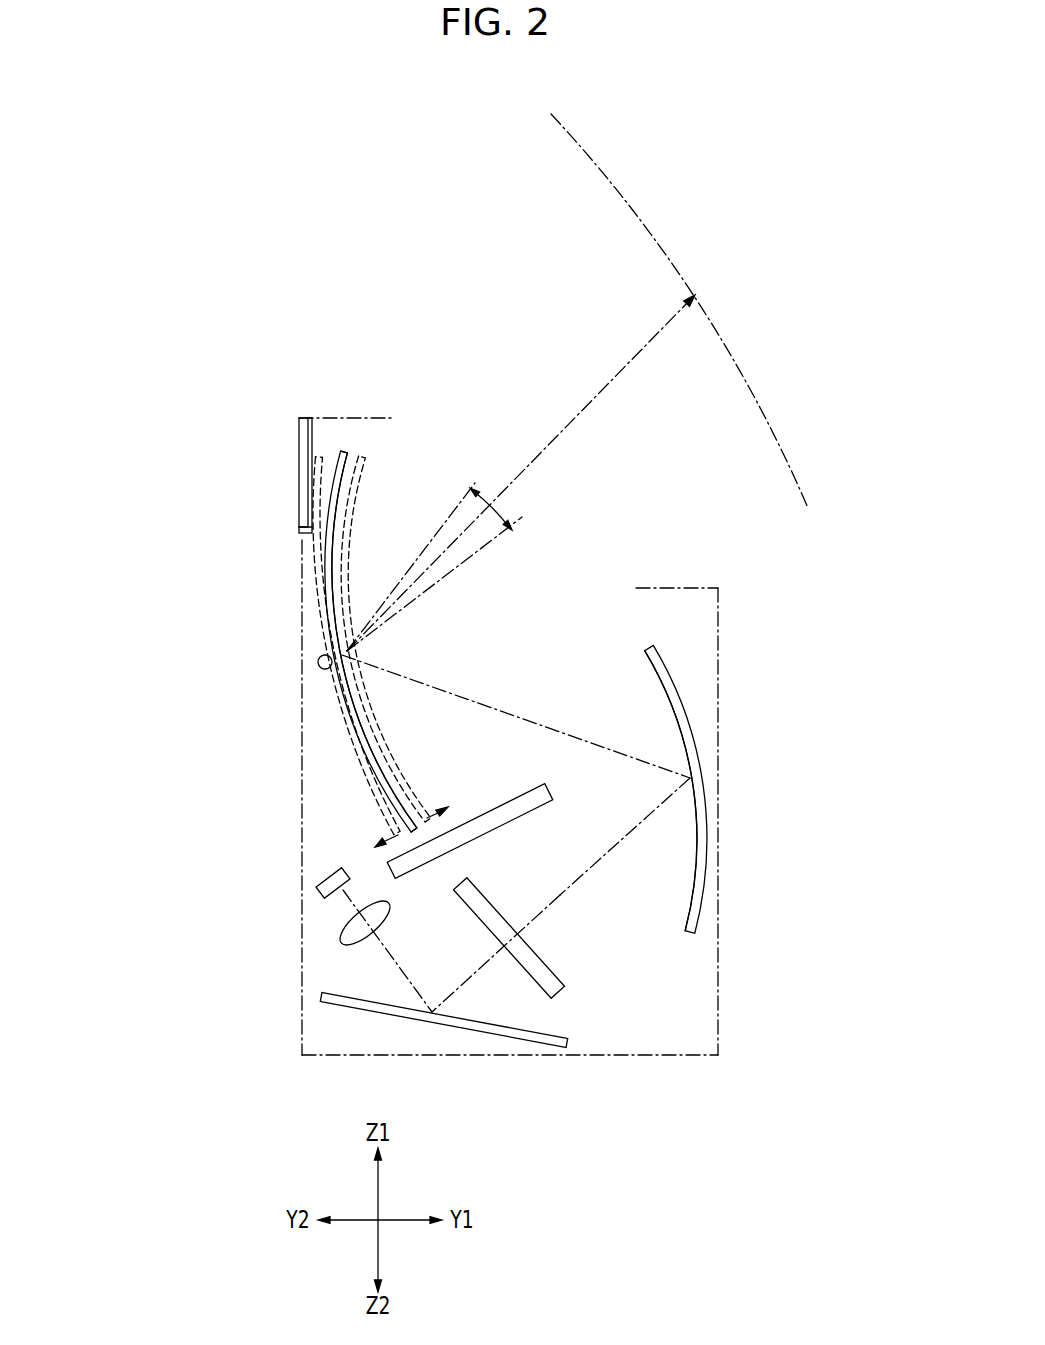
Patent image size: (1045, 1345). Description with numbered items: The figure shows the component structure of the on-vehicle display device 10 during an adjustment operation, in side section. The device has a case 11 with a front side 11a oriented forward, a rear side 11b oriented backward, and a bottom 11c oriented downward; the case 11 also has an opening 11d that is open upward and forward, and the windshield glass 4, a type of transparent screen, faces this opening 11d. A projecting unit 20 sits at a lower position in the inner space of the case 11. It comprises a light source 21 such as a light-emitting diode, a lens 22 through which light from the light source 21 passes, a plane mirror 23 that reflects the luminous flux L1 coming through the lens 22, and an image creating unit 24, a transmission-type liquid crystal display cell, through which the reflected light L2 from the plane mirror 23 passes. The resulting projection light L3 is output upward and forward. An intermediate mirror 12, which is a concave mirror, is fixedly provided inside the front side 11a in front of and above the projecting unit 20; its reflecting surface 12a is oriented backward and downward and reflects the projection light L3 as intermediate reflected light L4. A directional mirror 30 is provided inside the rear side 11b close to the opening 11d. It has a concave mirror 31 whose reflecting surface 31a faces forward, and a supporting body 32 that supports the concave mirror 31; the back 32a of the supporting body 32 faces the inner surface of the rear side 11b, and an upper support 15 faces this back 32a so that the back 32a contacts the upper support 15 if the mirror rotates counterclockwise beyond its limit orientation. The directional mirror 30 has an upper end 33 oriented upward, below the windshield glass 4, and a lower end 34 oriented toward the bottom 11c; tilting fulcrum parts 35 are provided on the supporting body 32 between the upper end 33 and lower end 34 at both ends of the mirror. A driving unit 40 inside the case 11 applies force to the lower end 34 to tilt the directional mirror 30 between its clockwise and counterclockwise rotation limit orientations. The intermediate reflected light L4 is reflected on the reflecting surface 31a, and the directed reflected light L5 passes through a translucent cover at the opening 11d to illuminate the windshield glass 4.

The windshield glass 4 is at (590, 158).
The on-vehicle display device 10 is at (258, 750).
The case 11 is at (505, 787).
The front side 11a is at (718, 813).
The rear side 11b is at (302, 780).
The bottom 11c is at (583, 1060).
The opening 11d is at (597, 575).
The intermediate mirror 12 is at (696, 738).
The reflecting surface 12a is at (684, 878).
The upper support 15 is at (299, 440).
The projecting unit 20 is at (430, 981).
The light source 21 is at (318, 886).
The lens 22 is at (343, 943).
The plane mirror 23 is at (345, 1010).
The image creating unit 24 is at (508, 924).
The directional mirror 30 is at (342, 599).
The concave mirror 31 is at (336, 610).
The reflecting surface 31a is at (336, 532).
The supporting body 32 is at (330, 622).
The back 32a is at (303, 540).
The upper end 33 is at (345, 451).
The lower end 34 is at (420, 835).
The tilting fulcrum parts 35 is at (318, 662).
The driving unit 40 is at (516, 790).
The luminous flux L1 is at (398, 967).
The reflected light L2 is at (477, 973).
The projection light L3 is at (603, 861).
The intermediate reflected light L4 is at (570, 735).
The directed reflected light L5 is at (568, 420).